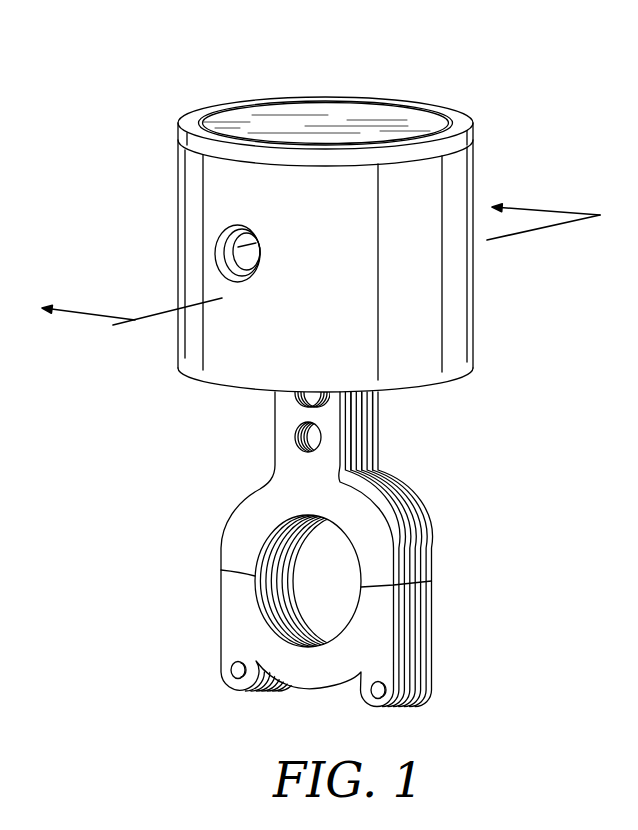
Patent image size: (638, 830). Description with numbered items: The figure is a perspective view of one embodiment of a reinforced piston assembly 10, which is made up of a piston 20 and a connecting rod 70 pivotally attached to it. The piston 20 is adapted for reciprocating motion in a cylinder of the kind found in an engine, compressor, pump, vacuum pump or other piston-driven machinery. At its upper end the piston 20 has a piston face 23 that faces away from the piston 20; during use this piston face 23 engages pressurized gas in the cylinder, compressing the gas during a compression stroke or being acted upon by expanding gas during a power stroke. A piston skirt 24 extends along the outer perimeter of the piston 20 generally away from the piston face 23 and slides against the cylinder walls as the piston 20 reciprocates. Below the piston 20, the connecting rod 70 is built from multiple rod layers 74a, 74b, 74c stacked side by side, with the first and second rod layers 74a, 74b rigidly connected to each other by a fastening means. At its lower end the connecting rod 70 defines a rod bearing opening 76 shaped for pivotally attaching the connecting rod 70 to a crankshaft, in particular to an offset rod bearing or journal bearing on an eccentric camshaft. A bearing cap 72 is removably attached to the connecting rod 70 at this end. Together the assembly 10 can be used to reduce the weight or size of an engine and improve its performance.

The reinforced piston assembly 10 is at (520, 77).
The piston 20 is at (510, 328).
The piston face 23 is at (345, 118).
The piston skirt 24 is at (193, 212).
The connecting rod 70 is at (467, 563).
The bearing cap 72 is at (453, 687).
The first rod layer 74a is at (378, 415).
The second rod layer 74b is at (376, 433).
The third rod layer 74c is at (376, 463).
The rod bearing opening 76 is at (308, 588).